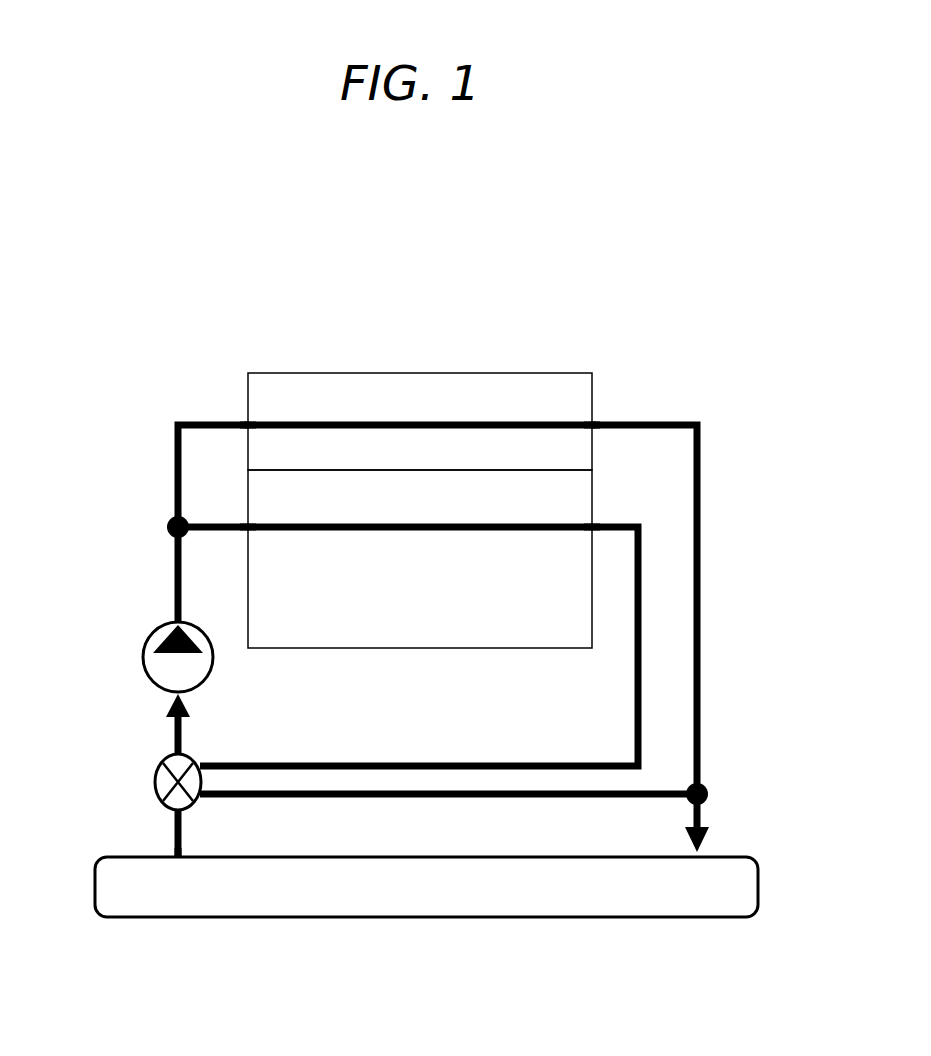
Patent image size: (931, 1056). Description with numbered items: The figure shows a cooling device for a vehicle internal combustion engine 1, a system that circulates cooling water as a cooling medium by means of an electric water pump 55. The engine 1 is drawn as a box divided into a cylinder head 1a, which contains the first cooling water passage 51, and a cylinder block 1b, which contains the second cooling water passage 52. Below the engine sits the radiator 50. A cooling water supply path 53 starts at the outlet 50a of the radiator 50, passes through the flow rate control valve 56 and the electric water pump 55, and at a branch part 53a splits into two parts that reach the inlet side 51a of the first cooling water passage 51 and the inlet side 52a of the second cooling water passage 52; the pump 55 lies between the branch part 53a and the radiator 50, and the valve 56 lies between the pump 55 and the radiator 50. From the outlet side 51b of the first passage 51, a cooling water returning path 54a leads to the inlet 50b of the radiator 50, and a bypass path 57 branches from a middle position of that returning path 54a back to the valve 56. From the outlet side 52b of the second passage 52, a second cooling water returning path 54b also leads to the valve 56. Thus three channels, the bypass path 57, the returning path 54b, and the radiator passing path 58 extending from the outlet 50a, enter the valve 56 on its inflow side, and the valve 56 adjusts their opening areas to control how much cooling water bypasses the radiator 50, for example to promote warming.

The internal combustion engine 1 is at (420, 454).
The cylinder head 1a is at (471, 393).
The cylinder block 1b is at (560, 640).
The radiator 50 is at (490, 918).
The outlet of radiator 50a is at (173, 855).
The inlet of radiator 50b is at (705, 852).
The first cooling water passage 51 is at (397, 420).
The inlet side of first cooling water passage 51a is at (247, 415).
The outlet side of first cooling water passage 51b is at (594, 418).
The second cooling water passage 52 is at (425, 532).
The inlet side of second cooling water passage 52a is at (245, 531).
The outlet side of second cooling water passage 52b is at (598, 525).
The cooling water supply path 53 is at (173, 583).
The branch part 53a is at (165, 527).
The cooling water returning path 54a is at (703, 553).
The cooling water returning path 54b is at (645, 673).
The electric water pump 55 is at (143, 658).
The flow rate control valve 56 is at (153, 780).
The bypass path 57 is at (522, 797).
The radiator passing path 58 is at (180, 833).